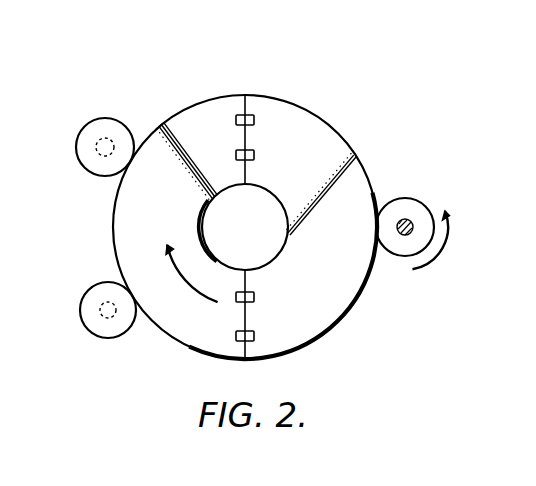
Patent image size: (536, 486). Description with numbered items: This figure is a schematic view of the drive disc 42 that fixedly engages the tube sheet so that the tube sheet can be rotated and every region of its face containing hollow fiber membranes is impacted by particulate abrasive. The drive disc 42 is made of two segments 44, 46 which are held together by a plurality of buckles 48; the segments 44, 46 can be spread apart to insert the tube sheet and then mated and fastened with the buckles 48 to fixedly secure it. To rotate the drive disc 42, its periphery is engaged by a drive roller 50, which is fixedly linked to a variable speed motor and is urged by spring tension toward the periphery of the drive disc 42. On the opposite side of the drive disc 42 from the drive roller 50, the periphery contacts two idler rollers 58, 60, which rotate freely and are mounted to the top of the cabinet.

The drive disc 42 is at (362, 293).
The segment 44 is at (318, 138).
The segment 46 is at (212, 118).
The buckles 48 is at (255, 116).
The drive roller 50 is at (407, 197).
The idler roller 58 is at (113, 118).
The idler roller 60 is at (85, 290).